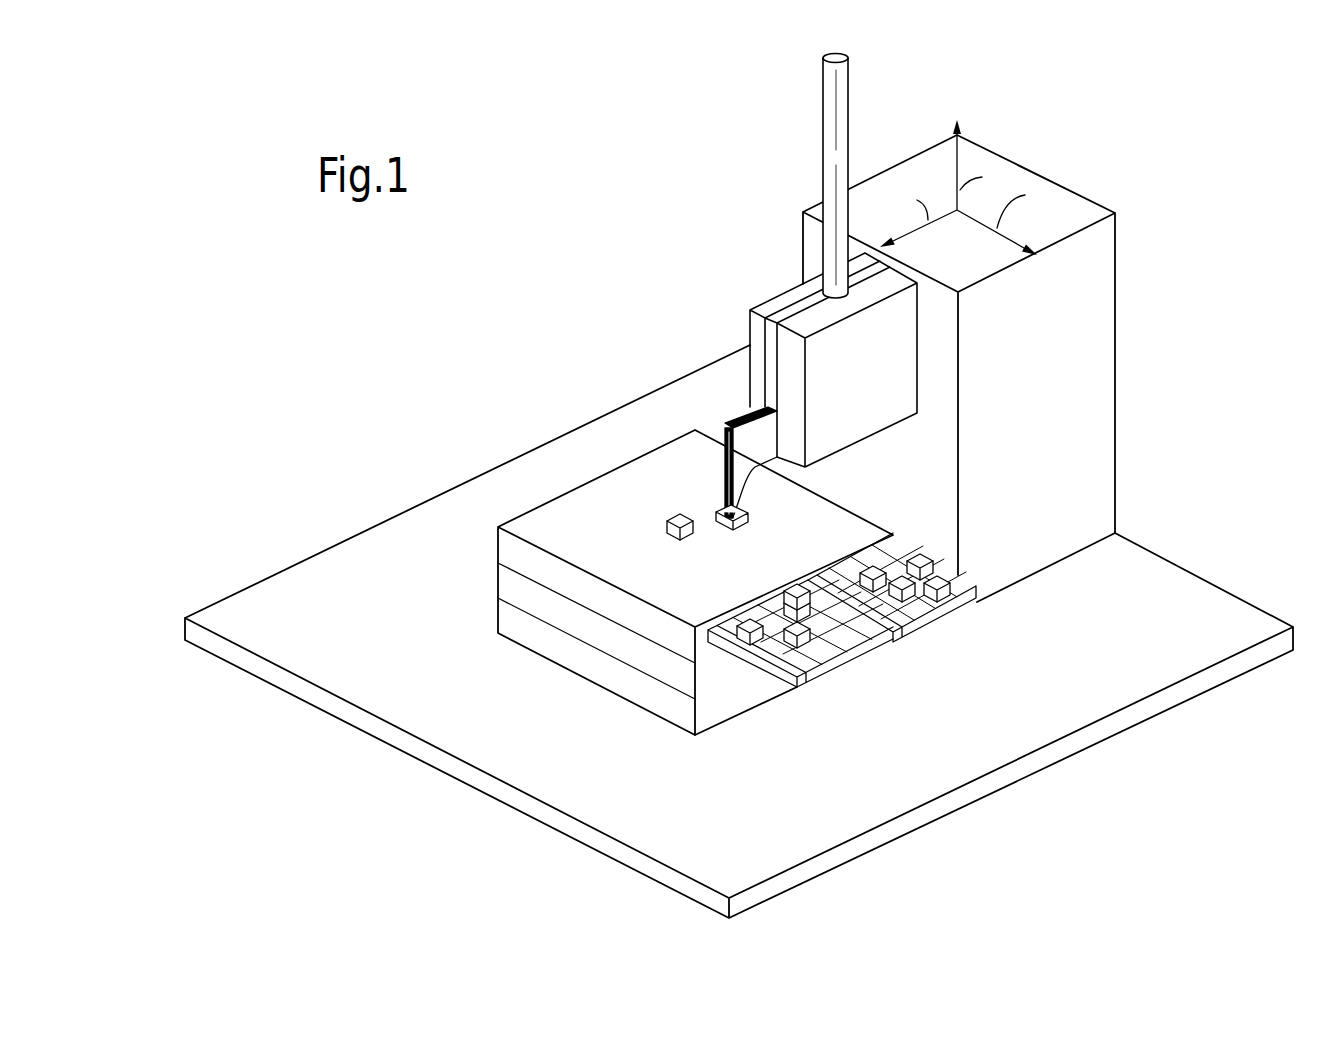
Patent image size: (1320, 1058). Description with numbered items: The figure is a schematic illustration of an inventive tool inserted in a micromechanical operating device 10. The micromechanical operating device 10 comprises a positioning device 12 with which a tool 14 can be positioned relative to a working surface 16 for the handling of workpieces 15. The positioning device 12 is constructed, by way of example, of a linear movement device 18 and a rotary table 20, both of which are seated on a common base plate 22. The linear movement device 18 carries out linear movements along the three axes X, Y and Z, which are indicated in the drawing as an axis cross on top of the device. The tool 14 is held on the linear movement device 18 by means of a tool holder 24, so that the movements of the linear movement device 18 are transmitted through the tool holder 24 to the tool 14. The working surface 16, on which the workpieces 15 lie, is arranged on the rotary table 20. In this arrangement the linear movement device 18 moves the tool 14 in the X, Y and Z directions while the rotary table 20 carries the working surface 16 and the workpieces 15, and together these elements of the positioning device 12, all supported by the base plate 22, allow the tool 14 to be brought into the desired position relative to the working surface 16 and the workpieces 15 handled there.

The micromechanical operating device 10 is at (1095, 160).
The positioning device 12 is at (938, 642).
The tool 14 is at (753, 428).
The workpieces 15 is at (717, 522).
The working surface 16 is at (548, 512).
The linear movement device 18 is at (1075, 432).
The rotary table 20 is at (547, 645).
The base plate 22 is at (1120, 722).
The tool holder 24 is at (775, 300).